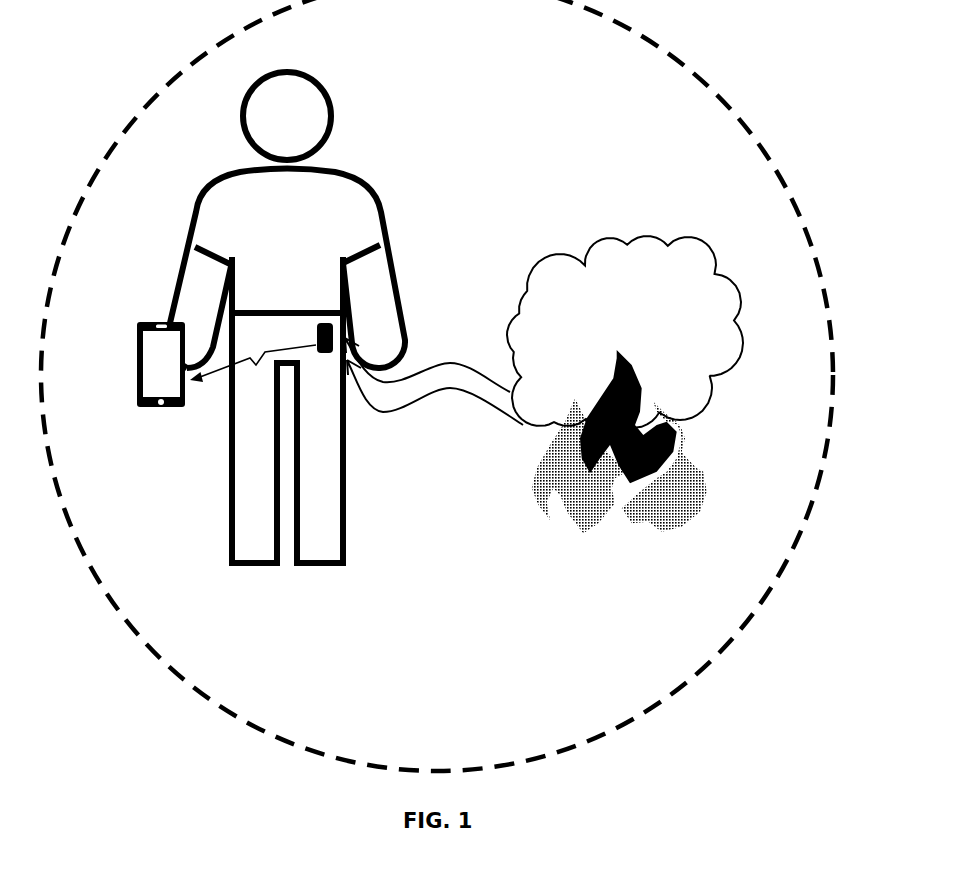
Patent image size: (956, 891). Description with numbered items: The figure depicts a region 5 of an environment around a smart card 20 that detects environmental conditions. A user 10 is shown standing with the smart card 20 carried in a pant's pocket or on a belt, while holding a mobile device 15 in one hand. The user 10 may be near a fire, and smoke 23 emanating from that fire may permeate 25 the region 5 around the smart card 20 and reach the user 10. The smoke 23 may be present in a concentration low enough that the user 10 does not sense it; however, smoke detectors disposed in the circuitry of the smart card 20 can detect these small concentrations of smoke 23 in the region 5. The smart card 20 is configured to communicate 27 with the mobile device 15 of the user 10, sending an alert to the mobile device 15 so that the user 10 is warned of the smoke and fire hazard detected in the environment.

The region 5 is at (653, 46).
The user 10 is at (331, 117).
The mobile device 15 is at (153, 322).
The smart card 20 is at (338, 322).
The smoke 23 is at (713, 240).
The permeation of smoke 25 is at (455, 362).
The communication 27 is at (213, 377).